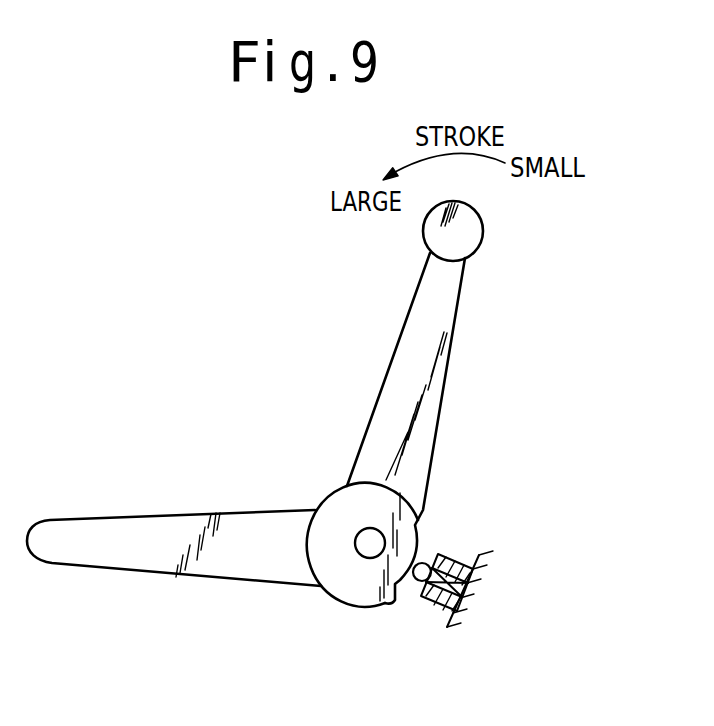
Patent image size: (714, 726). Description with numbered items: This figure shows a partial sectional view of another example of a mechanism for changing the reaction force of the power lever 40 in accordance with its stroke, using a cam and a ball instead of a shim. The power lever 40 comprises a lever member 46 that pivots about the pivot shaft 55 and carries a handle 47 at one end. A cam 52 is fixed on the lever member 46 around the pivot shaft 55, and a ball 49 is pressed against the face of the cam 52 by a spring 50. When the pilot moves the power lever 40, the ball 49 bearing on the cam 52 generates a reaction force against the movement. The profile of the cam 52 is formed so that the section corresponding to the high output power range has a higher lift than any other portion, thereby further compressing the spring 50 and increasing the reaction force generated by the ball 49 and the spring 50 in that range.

The power lever 40 is at (343, 352).
The lever member 46 is at (427, 438).
The handle 47 is at (458, 238).
The ball 49 is at (425, 565).
The spring 50 is at (468, 595).
The cam 52 is at (347, 585).
The pivot shaft 55 is at (362, 532).